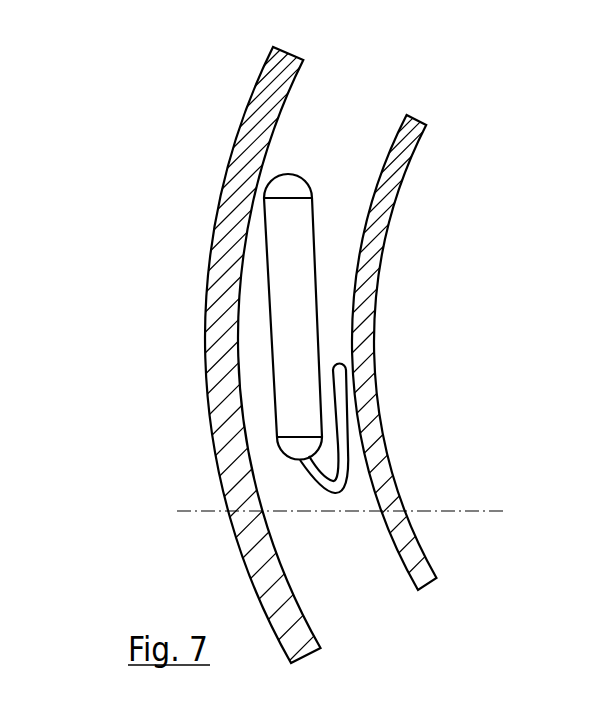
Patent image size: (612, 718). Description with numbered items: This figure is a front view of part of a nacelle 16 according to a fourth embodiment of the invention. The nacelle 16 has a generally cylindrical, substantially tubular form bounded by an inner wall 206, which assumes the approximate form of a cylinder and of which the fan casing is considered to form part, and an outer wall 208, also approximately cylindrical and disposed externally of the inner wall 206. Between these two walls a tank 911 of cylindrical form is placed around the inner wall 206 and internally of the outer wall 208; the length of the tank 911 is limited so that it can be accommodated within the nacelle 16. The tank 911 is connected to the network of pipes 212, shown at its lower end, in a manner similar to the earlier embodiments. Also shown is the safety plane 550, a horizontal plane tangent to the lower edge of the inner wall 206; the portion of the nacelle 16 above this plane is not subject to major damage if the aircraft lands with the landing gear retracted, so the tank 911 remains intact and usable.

The nacelle 16 is at (148, 307).
The outer wall 208 is at (233, 218).
The inner wall 206 is at (378, 273).
The tank 911 is at (283, 227).
The network of pipes 212 is at (345, 408).
The safety plane 550 is at (197, 513).